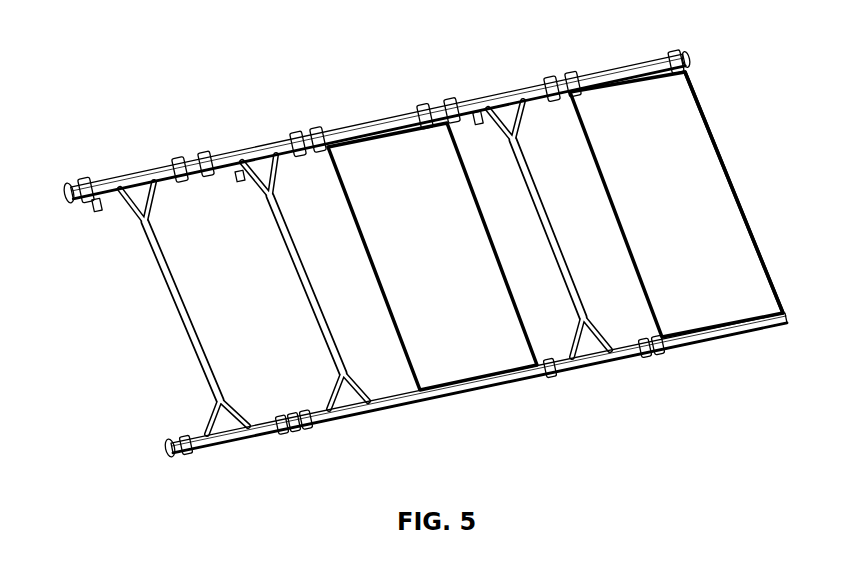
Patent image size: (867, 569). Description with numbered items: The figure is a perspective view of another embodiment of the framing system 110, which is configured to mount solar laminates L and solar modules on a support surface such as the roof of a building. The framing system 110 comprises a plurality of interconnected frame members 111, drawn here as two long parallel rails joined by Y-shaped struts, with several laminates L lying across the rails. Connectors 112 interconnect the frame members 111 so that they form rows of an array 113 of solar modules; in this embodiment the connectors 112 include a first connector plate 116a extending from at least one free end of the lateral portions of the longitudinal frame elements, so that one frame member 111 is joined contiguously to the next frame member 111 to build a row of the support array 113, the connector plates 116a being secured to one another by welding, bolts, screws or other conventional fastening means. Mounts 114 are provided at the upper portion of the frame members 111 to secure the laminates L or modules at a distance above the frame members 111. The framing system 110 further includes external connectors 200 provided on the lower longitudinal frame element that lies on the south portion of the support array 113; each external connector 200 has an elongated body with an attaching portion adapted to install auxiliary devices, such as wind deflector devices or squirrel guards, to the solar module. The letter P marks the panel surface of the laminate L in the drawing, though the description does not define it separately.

The framing system 110 is at (426, 259).
The frame member 111 is at (787, 325).
The connector 112 is at (68, 204).
The array 113 is at (688, 48).
The mount 114 is at (562, 375).
The first connector plate 116a is at (502, 98).
The external connector 200 is at (212, 452).
The laminate L is at (720, 140).
The panel P is at (676, 204).